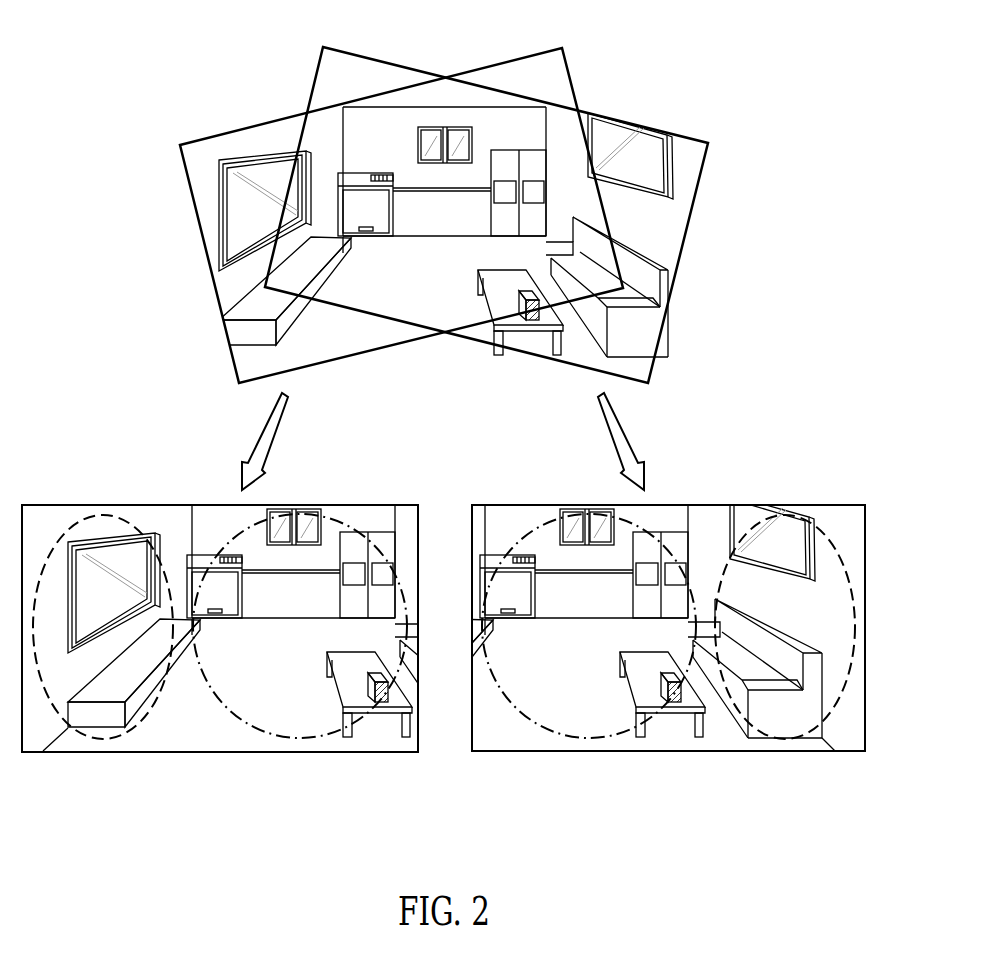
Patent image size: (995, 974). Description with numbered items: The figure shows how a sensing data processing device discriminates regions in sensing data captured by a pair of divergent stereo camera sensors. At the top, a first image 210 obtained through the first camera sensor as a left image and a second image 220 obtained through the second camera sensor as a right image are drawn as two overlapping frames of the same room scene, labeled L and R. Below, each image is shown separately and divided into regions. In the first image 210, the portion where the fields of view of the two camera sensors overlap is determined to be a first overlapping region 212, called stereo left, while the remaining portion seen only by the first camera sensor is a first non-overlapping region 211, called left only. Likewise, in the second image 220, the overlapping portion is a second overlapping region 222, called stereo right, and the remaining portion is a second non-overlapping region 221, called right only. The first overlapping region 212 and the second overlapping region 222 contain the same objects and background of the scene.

The first image 210 is at (180, 145).
The second image 220 is at (708, 143).
The first non-overlapping region 211 is at (104, 740).
The first overlapping region 212 is at (297, 738).
The second overlapping region 222 is at (588, 738).
The second non-overlapping region 221 is at (783, 738).